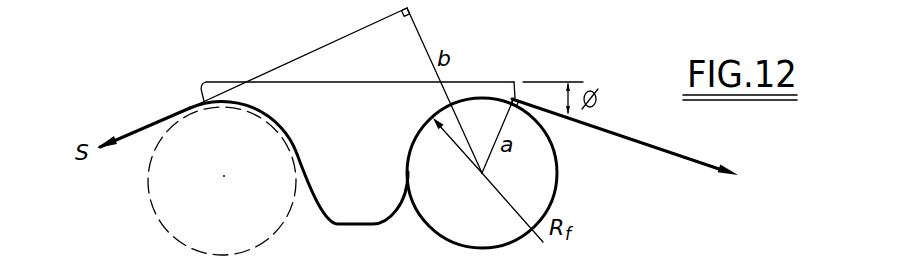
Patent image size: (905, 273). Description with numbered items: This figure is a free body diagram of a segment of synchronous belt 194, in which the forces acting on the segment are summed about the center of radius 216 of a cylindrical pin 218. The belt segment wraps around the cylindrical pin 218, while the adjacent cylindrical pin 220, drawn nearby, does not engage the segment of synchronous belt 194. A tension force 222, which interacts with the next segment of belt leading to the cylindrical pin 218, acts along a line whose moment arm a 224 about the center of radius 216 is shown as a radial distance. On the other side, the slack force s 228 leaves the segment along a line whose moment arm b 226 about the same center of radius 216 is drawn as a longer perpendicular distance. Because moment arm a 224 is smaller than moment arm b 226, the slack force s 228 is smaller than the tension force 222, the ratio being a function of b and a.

The synchronous belt 194 is at (489, 80).
The center of radius 216 is at (480, 177).
The cylindrical pin 218 is at (558, 172).
The adjacent cylindrical pin 220 is at (243, 253).
The tension force 222 is at (665, 147).
The moment arm a 224 is at (487, 158).
The moment arm b 226 is at (421, 32).
The slack force s 228 is at (132, 130).